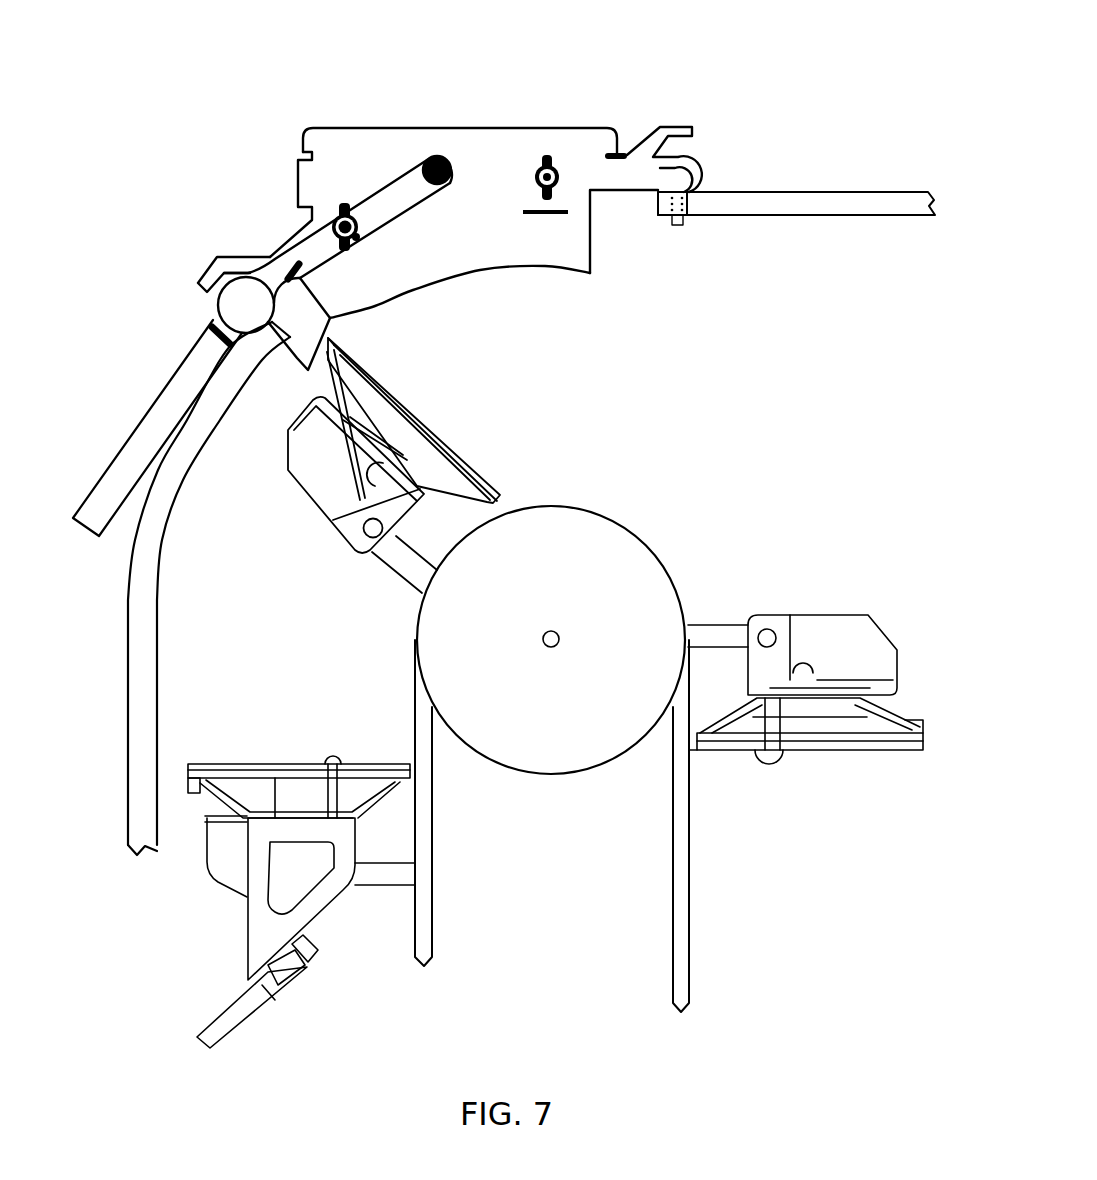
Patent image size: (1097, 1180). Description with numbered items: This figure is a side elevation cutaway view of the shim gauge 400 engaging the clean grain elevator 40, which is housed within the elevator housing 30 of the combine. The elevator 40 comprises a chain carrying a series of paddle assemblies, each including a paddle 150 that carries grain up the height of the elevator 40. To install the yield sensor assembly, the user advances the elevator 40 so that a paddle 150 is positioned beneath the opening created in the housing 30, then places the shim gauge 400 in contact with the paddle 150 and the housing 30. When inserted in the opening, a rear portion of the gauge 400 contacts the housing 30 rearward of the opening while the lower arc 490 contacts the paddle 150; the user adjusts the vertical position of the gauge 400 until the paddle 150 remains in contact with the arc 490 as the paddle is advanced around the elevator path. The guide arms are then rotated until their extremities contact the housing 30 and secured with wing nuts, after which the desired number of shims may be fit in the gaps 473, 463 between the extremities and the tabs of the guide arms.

The shim gauge 400 is at (500, 63).
The elevator housing 30 is at (837, 192).
The gap 473 is at (698, 148).
The gap 463 is at (208, 303).
The lower arc 490 is at (450, 283).
The paddle 150 is at (483, 455).
The grain elevator 40 is at (697, 563).